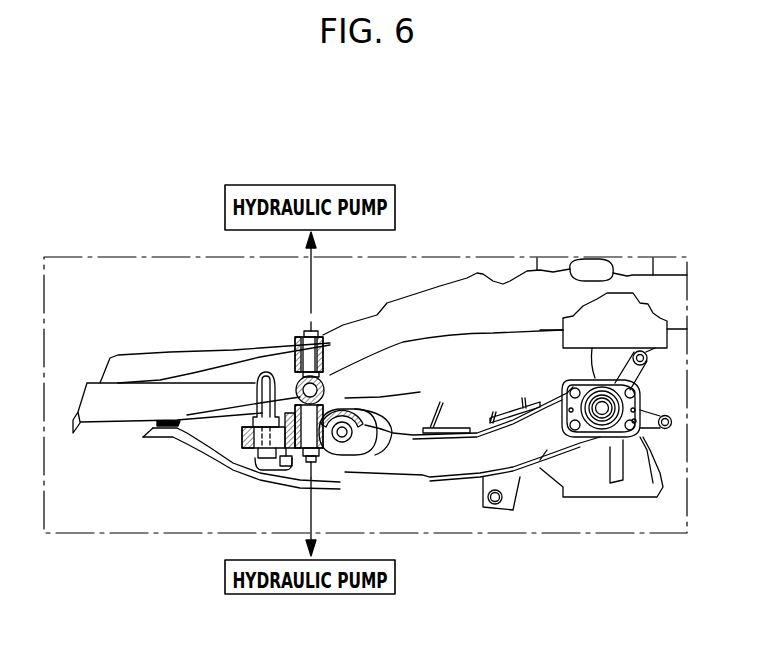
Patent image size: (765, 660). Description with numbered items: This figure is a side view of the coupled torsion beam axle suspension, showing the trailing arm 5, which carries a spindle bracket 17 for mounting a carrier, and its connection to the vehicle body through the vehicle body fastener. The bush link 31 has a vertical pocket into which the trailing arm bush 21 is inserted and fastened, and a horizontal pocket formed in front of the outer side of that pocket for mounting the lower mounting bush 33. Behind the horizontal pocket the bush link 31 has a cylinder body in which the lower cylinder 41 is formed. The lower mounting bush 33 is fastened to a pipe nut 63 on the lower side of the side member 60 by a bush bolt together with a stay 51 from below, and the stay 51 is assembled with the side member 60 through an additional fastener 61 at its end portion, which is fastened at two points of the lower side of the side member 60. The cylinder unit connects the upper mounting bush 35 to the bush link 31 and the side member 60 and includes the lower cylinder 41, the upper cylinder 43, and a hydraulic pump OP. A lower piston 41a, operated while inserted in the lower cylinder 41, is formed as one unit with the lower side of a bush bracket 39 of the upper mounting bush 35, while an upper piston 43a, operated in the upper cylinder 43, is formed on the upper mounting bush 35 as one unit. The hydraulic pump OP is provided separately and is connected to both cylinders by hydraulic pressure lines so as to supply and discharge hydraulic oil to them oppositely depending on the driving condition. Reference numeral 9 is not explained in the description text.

The trailing arm 5 is at (450, 458).
The knuckle 9 is at (605, 497).
The spindle bracket 17 is at (640, 440).
The trailing arm bush 21 is at (420, 392).
The bush link 31 is at (298, 478).
The lower mounting bush 33 is at (255, 453).
The upper mounting bush 35 is at (297, 346).
The bush bracket 39 is at (290, 412).
The lower cylinder 41 is at (325, 465).
The lower piston 41a is at (347, 437).
The upper cylinder 43 is at (323, 333).
The upper piston 43a is at (362, 381).
The stay 51 is at (213, 453).
The side member 60 is at (474, 292).
The fastener 61 is at (145, 426).
The pipe nut 63 is at (262, 372).
The hydraulic pump OP is at (398, 207).